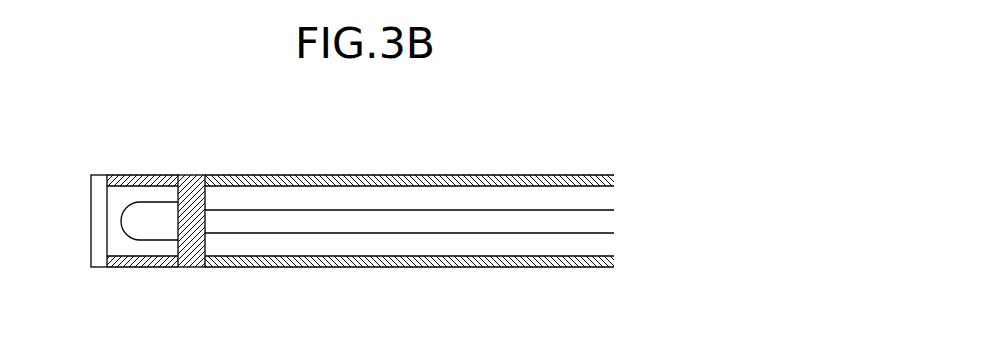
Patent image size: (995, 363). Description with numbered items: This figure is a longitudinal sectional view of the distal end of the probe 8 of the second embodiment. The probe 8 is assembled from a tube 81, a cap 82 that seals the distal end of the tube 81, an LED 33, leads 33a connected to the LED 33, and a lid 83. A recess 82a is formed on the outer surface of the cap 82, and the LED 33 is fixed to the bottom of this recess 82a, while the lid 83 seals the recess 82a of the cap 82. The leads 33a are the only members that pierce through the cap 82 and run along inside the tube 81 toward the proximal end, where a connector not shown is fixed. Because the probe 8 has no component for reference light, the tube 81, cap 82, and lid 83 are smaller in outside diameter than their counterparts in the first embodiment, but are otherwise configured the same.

The probe 8 is at (417, 158).
The tube 81 is at (278, 175).
The cap 82 is at (168, 267).
The recess 82a is at (117, 240).
The lid 83 is at (100, 175).
The LED 33 is at (140, 202).
The leads 33a is at (280, 233).